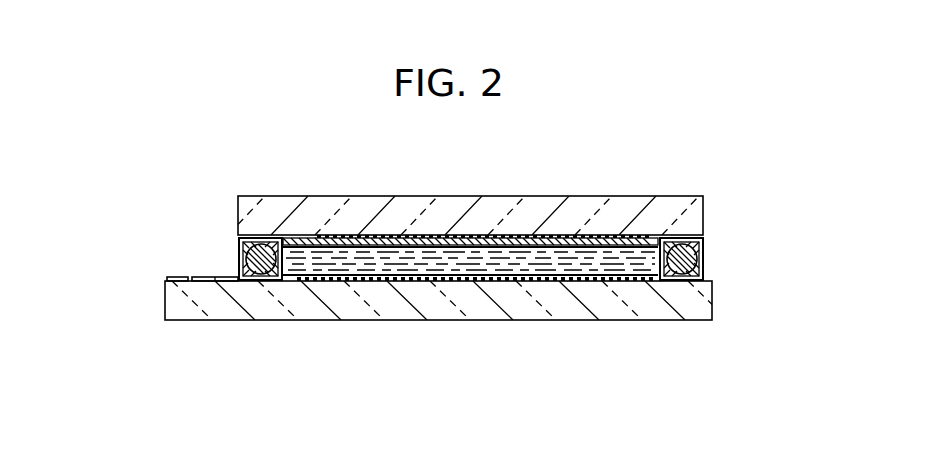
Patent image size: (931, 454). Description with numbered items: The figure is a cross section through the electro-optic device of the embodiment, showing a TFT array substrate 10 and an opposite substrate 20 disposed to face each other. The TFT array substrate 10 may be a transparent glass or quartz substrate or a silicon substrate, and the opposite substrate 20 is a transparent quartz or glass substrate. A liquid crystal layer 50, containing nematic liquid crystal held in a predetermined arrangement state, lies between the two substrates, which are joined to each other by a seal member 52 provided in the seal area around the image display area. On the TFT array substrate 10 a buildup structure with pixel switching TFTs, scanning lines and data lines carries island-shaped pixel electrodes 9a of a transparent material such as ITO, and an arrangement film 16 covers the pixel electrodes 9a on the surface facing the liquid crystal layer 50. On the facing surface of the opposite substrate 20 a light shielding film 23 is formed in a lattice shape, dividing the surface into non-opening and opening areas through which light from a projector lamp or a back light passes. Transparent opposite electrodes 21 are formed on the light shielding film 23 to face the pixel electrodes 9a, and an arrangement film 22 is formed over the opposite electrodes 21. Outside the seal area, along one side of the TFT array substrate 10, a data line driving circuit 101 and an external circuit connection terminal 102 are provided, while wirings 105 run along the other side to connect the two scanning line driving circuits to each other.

The opposite substrate 20 is at (372, 205).
The opposite electrodes 21 is at (462, 235).
The arrangement film 22 is at (518, 250).
The light shielding film 23 is at (592, 232).
The seal member 52 is at (238, 262).
The data line driving circuit 101 is at (215, 277).
The external circuit connection terminal 102 is at (183, 278).
The pixel electrodes 9a is at (362, 281).
The liquid crystal layer 50 is at (420, 270).
The arrangement film 16 is at (568, 267).
The TFT array substrate 10 is at (485, 308).
The wirings 105 is at (647, 278).